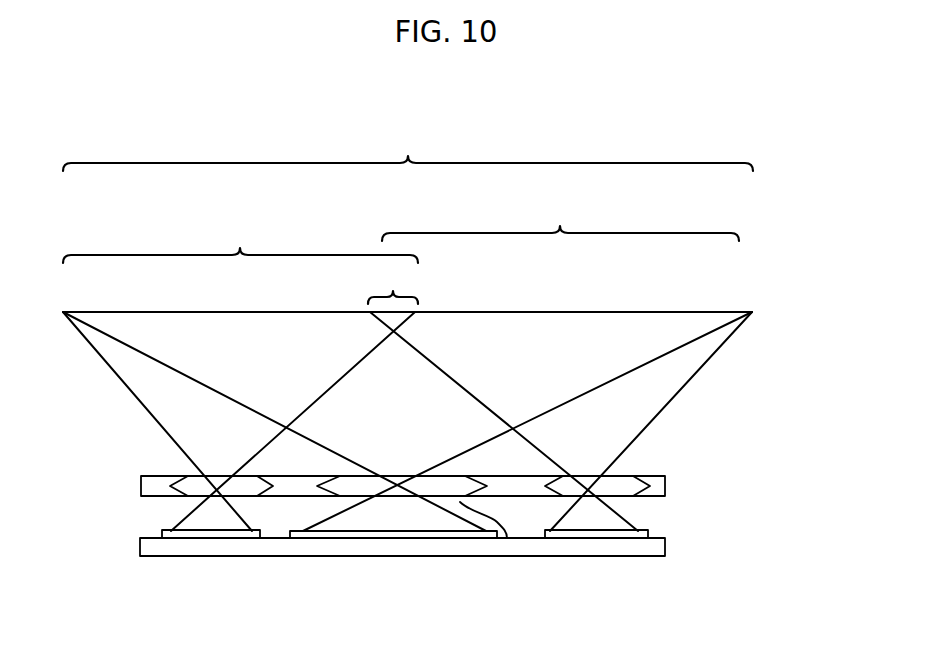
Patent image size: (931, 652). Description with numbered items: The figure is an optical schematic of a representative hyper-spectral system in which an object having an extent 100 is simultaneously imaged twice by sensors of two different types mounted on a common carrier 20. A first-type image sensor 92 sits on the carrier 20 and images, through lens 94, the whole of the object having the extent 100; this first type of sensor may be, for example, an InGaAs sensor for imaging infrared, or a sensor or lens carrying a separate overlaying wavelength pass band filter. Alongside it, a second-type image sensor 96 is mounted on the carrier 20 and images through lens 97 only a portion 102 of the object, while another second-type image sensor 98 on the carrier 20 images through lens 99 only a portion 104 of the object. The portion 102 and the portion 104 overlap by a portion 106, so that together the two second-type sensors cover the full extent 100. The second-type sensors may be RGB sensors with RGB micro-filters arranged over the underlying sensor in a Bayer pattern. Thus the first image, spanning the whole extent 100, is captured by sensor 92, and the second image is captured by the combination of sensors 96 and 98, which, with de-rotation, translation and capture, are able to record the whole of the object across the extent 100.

The carrier 20 is at (663, 548).
The type 1 image sensor 92 is at (400, 538).
The lens 94 is at (395, 476).
The type 2 image sensor 96 is at (208, 538).
The lens 97 is at (203, 476).
The type 2 image sensor 98 is at (603, 540).
The lens 99 is at (573, 476).
The extent 100 is at (408, 147).
The portion 102 is at (240, 243).
The portion 104 is at (560, 221).
The portion 106 is at (393, 281).